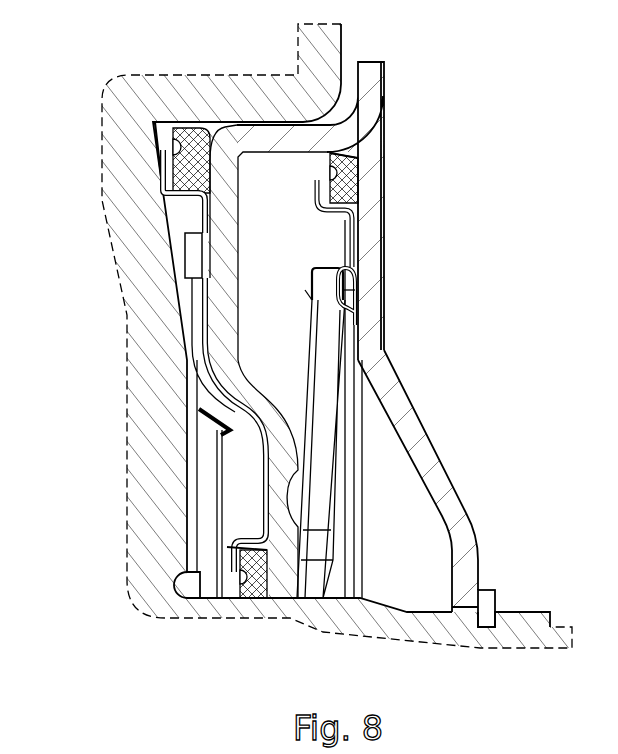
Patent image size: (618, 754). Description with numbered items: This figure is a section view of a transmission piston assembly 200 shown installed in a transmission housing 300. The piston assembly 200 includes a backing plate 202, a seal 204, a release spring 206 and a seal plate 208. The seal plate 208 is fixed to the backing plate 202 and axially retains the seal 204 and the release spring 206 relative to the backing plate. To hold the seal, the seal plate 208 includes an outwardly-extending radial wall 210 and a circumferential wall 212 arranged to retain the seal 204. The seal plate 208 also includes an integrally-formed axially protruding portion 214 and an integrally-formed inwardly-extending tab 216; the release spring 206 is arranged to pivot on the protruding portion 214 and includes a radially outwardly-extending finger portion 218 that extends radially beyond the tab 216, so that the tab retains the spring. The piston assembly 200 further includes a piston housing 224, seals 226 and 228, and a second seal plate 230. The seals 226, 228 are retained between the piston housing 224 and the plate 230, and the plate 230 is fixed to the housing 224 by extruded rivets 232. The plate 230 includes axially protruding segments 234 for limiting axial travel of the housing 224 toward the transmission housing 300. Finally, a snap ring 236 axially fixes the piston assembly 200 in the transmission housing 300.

The transmission housing 300 is at (253, 67).
The transmission piston assembly 200 is at (482, 226).
The backing plate 202 is at (420, 447).
The seal 204 is at (347, 155).
The release spring 206 is at (313, 510).
The seal plate 208 is at (348, 290).
The outwardly-extending radial wall 210 is at (335, 186).
The circumferential wall 212 is at (340, 200).
The axially protruding portion 214 is at (353, 312).
The inwardly-extending tab 216 is at (317, 283).
The radially outwardly-extending finger portion 218 is at (338, 260).
The piston housing 224 is at (215, 322).
The seal 226 is at (182, 175).
The seal 228 is at (253, 587).
The seal plate 230 is at (268, 484).
The extruded rivet 232 is at (196, 262).
The axially protruding segment 234 is at (191, 382).
The snap ring 236 is at (487, 607).